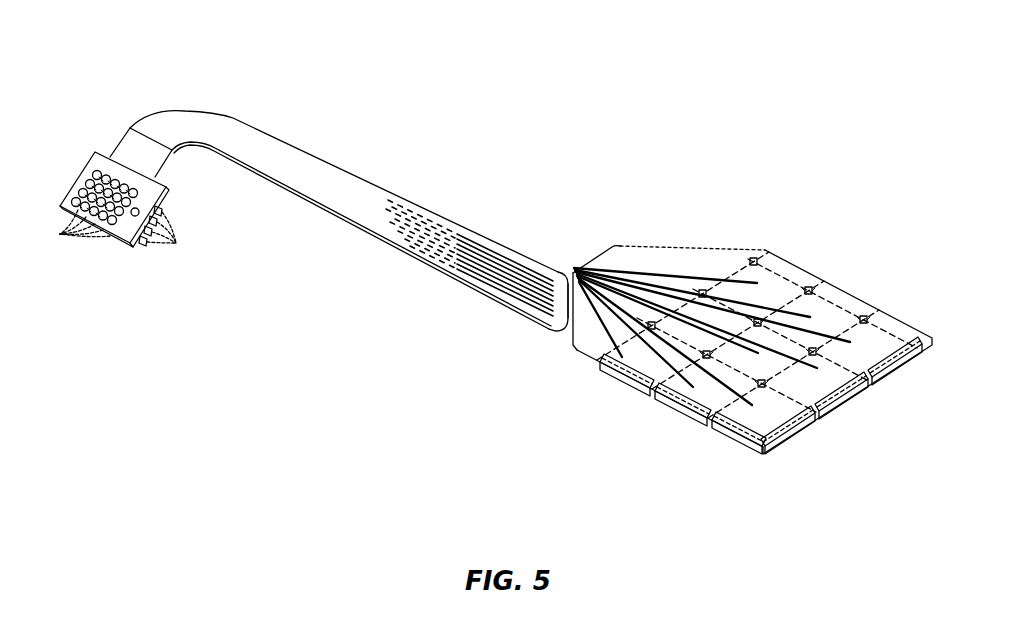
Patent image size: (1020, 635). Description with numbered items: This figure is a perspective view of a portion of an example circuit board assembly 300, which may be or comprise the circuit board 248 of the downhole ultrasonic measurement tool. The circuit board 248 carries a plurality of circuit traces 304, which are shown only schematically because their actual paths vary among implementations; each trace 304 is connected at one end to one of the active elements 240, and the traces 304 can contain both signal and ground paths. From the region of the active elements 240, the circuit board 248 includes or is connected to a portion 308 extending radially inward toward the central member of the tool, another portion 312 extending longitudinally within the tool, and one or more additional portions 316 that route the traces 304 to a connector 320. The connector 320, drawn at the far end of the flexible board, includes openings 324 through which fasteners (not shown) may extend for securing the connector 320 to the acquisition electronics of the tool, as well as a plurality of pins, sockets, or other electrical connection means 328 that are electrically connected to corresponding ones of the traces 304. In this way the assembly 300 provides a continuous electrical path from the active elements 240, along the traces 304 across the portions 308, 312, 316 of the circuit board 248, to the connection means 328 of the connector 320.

The circuit board assembly 300 is at (462, 57).
The circuit traces 304 is at (547, 259).
The radially inward extending portion 308 is at (566, 312).
The longitudinally extending portion 312 is at (360, 186).
The additional portion 316 is at (137, 133).
The connector 320 is at (92, 158).
The openings 324 is at (77, 183).
The electrical connection means 328 is at (60, 234).
The circuit board 248 is at (738, 257).
The active elements 240 is at (792, 270).